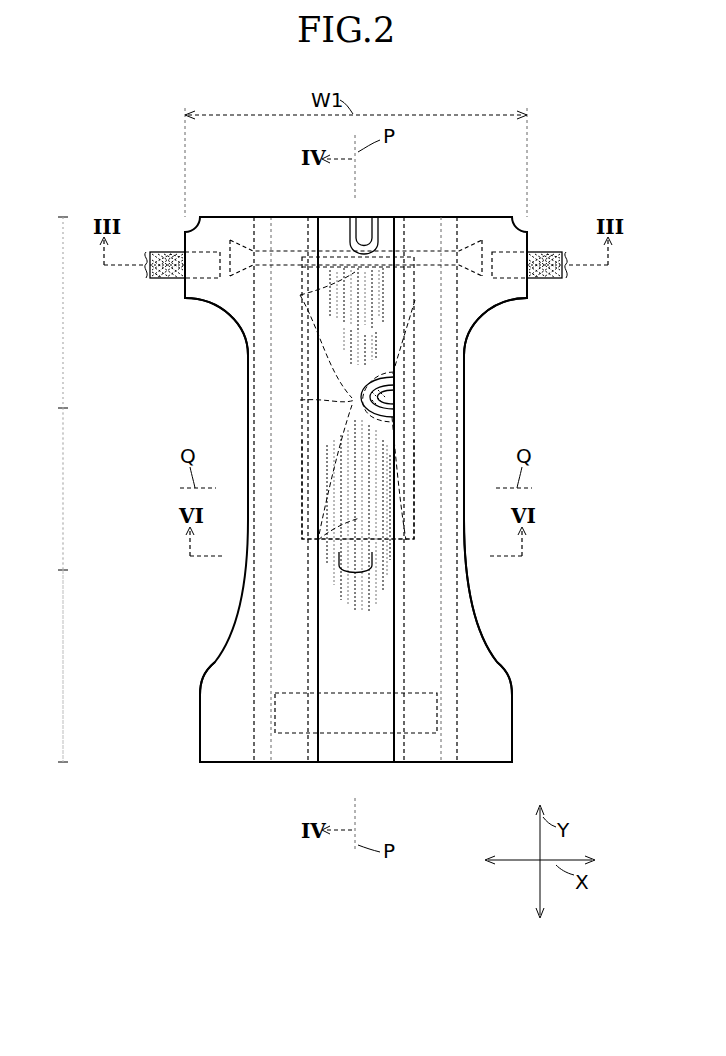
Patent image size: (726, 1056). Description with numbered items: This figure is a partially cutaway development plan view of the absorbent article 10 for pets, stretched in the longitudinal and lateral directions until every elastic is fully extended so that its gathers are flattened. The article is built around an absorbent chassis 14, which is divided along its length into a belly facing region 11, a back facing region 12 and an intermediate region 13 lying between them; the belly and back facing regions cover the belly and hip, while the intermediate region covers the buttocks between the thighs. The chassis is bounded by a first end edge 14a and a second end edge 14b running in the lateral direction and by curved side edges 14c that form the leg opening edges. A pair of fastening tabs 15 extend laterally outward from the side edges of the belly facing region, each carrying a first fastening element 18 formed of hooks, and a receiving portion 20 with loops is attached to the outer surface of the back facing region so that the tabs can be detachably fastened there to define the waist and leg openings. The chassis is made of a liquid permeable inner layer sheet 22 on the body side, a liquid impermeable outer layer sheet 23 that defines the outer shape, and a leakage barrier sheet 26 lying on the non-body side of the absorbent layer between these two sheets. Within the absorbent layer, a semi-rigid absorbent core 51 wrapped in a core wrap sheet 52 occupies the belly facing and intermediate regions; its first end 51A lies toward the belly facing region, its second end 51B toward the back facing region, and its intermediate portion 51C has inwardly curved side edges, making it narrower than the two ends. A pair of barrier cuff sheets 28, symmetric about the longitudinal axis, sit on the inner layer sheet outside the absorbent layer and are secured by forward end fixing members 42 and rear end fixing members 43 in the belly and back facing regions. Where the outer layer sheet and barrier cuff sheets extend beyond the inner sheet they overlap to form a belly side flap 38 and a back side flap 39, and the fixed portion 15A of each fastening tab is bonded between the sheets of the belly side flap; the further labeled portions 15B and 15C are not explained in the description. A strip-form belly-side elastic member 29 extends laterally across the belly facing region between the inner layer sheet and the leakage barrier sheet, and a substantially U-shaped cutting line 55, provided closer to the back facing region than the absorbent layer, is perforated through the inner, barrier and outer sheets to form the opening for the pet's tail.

The absorbent article 10 is at (538, 162).
The belly facing region 11 is at (63, 300).
The back facing region 12 is at (63, 663).
The intermediate region 13 is at (63, 483).
The absorbent chassis 14 is at (498, 649).
The first end edge 14a is at (233, 216).
The second end edge 14b is at (225, 764).
The side edges (leg opening edges) 14c is at (246, 571).
The fastening tabs 15 is at (166, 252).
The fixed portion 15A is at (408, 292).
The absorbent structure rear portion 15B is at (398, 545).
The absorbent structure middle portion 15C is at (395, 423).
The first fastening element 18 is at (167, 277).
The receiving portion 20 is at (343, 734).
The inner layer sheet 22 is at (332, 229).
The outer layer sheet 23 is at (368, 230).
The leakage barrier sheet 26 is at (380, 228).
The barrier cuff sheets 28 is at (222, 677).
The belly-side elastic member 29 is at (357, 238).
The belly side flap 38 is at (204, 301).
The back side flap 39 is at (216, 741).
The forward end fixing members 42 is at (285, 224).
The rear end fixing members 43 is at (300, 621).
The absorbent core 51 is at (393, 400).
The first end 51A is at (298, 298).
The second end 51B is at (322, 520).
The intermediate portion 51C is at (352, 400).
The core wrap sheet 52 is at (388, 386).
The cutting line 55 is at (350, 574).